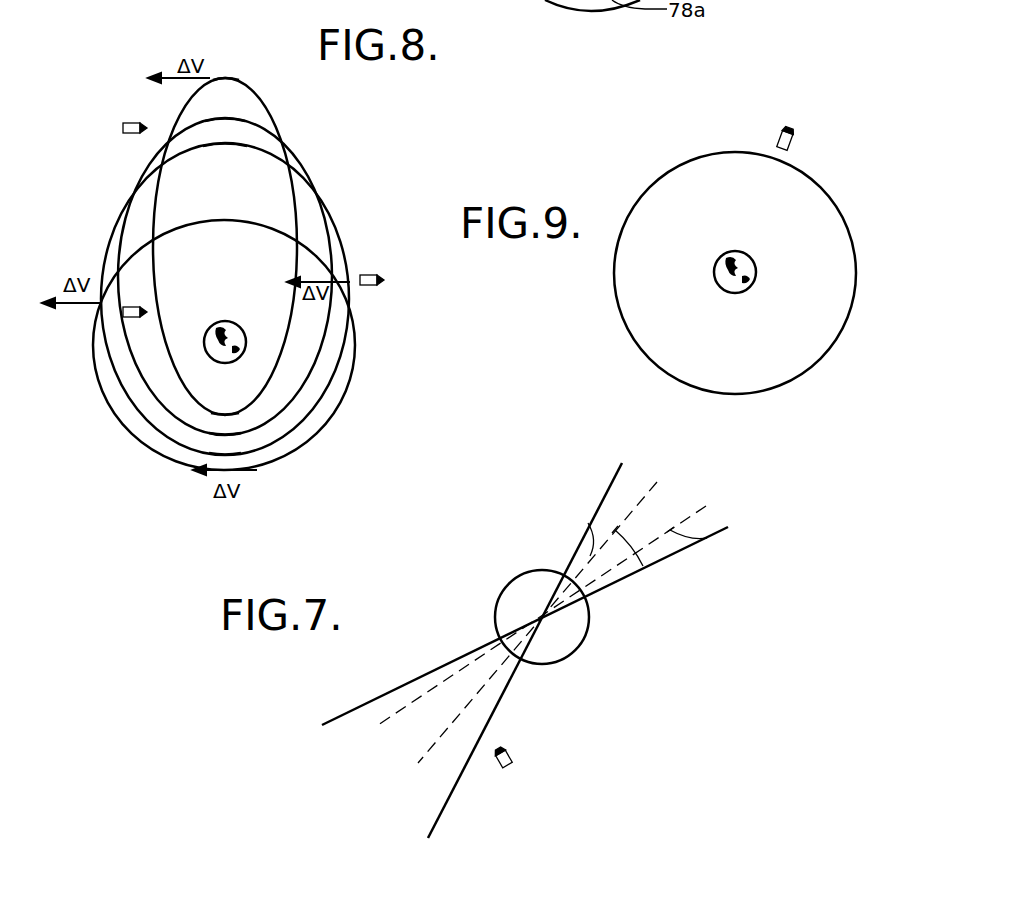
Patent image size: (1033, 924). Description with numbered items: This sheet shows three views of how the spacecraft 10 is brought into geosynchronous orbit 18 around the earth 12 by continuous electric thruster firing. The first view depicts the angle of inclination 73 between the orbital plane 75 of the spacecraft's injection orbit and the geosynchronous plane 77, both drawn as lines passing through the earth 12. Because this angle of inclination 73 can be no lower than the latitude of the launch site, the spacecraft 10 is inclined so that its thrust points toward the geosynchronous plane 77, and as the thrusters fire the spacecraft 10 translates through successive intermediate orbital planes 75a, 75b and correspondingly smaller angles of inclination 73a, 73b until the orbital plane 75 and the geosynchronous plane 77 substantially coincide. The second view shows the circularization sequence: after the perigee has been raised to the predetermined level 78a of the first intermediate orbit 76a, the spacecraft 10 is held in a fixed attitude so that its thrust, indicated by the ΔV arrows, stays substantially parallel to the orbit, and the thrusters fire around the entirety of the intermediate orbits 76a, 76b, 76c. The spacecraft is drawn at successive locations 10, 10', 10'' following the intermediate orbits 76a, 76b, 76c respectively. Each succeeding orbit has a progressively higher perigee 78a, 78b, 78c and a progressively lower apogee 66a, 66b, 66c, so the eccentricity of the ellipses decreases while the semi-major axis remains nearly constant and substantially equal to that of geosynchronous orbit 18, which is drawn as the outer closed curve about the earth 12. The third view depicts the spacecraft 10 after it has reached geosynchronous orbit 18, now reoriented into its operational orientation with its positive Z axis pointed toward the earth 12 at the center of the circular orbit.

In FIG. 8, the spacecraft 10 is at (127, 108).
In FIG. 9, the spacecraft 10 is at (800, 147).
In FIG. 7, the spacecraft 10 is at (536, 745).
In FIG. 8, the spacecraft location 10' is at (91, 331).
In FIG. 8, the spacecraft location 10'' is at (394, 296).
In FIG. 8, the earth 12 is at (238, 323).
In FIG. 9, the earth 12 is at (727, 253).
In FIG. 7, the earth 12 is at (502, 588).
In FIG. 8, the geosynchronous orbit 18 is at (116, 410).
In FIG. 9, the geosynchronous orbit 18 is at (665, 172).
In FIG. 8, the apogee 66a is at (227, 78).
In FIG. 8, the apogee 66b is at (224, 120).
In FIG. 8, the apogee 66c is at (222, 145).
In FIG. 7, the angle of inclination 73 is at (588, 523).
In FIG. 7, the angle of inclination 73a is at (660, 561).
In FIG. 7, the angle of inclination 73b is at (707, 537).
In FIG. 7, the orbital plane 75 is at (607, 487).
In FIG. 7, the intermediate orbital plane 75a is at (637, 505).
In FIG. 7, the intermediate orbital plane 75b is at (690, 515).
In FIG. 8, the intermediate orbit 76a is at (300, 194).
In FIG. 8, the intermediate orbit 76b is at (330, 237).
In FIG. 8, the intermediate orbit 76c is at (338, 366).
In FIG. 7, the geosynchronous plane 77 is at (405, 683).
In FIG. 8, the perigee 78a is at (250, 402).
In FIG. 8, the perigee 78b is at (258, 426).
In FIG. 8, the perigee 78c is at (262, 448).